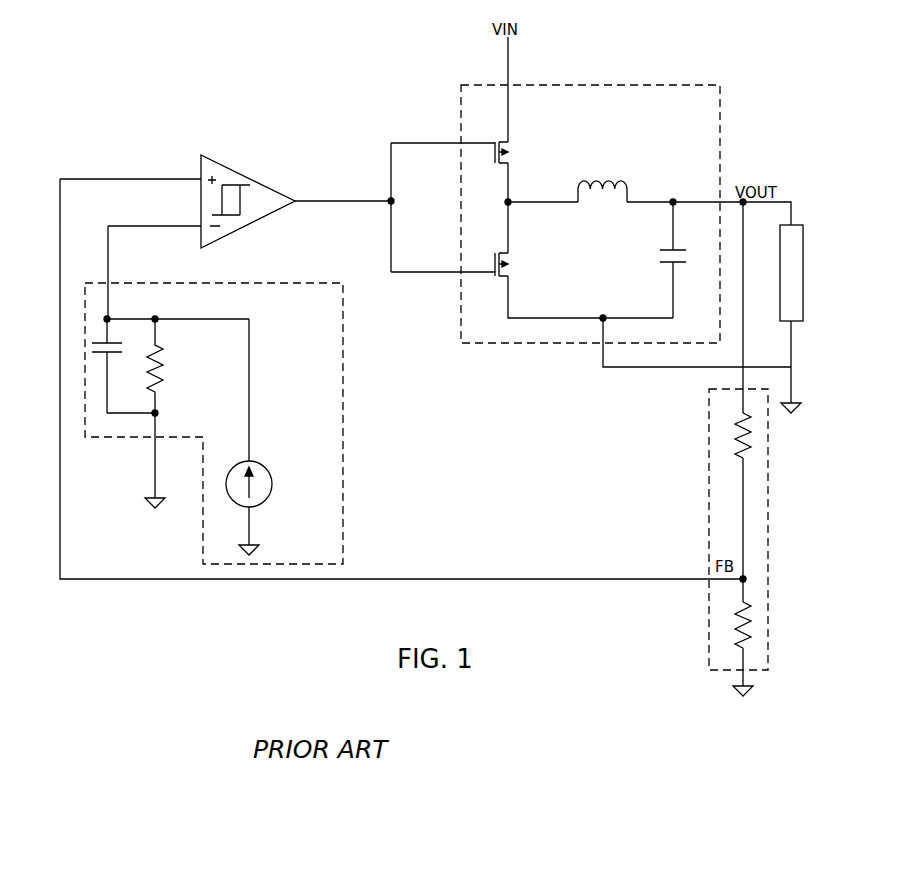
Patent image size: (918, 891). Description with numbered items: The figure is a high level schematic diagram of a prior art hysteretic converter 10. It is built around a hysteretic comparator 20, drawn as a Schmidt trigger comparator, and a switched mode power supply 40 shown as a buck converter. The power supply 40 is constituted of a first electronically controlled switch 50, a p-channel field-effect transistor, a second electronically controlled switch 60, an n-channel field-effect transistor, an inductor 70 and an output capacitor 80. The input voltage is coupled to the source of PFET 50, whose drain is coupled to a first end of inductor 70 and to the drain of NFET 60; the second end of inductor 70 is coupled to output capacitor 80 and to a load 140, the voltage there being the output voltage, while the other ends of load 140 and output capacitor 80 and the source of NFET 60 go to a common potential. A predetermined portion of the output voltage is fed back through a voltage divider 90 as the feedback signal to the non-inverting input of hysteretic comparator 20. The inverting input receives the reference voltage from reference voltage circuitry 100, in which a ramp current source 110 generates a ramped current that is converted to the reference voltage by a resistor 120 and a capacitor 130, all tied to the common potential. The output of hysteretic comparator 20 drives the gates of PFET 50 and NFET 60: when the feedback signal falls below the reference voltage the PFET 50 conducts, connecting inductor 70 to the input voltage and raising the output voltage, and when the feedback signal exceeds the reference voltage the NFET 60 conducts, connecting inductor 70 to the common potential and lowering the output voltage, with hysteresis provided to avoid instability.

The hysteretic converter 10 is at (143, 44).
The hysteretic comparator 20 is at (248, 228).
The switched mode power supply 40 is at (720, 133).
The first electronically controlled switch 50 is at (513, 143).
The second electronically controlled switch 60 is at (513, 270).
The inductor 70 is at (627, 188).
The output capacitor 80 is at (668, 260).
The voltage divider 90 is at (768, 477).
The reference voltage circuitry 100 is at (345, 398).
The ramp current source 110 is at (270, 497).
The resistor 120 is at (165, 368).
The capacitor 130 is at (123, 347).
The load 140 is at (803, 272).